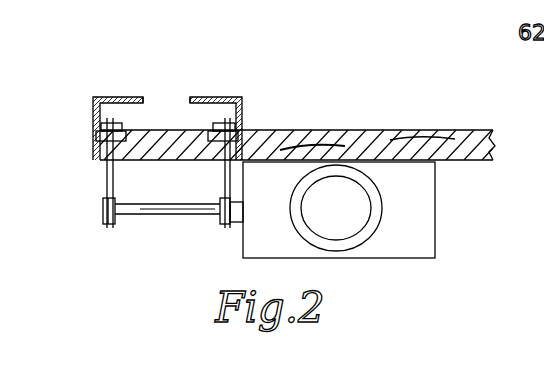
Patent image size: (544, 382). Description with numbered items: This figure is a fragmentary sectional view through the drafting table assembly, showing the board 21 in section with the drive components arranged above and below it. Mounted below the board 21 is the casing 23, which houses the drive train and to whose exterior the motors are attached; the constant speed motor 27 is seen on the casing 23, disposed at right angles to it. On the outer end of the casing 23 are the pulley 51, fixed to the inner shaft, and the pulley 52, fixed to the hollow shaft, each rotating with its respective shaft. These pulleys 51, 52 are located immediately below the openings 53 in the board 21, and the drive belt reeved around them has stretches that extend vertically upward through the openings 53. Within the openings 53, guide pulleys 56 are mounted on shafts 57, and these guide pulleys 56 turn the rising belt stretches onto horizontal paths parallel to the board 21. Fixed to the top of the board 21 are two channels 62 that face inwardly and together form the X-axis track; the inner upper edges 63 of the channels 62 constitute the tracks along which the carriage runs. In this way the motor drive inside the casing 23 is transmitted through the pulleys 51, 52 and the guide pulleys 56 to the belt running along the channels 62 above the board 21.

The board 21 is at (379, 130).
The casing 23 is at (418, 213).
The motor 27 is at (322, 213).
The pulley 51 is at (112, 227).
The pulley 52 is at (228, 227).
The openings 53 is at (129, 160).
The guide pulleys 56 is at (126, 110).
The shafts 57 is at (175, 215).
The channels 62 is at (97, 97).
The inner upper edges 63 is at (192, 100).